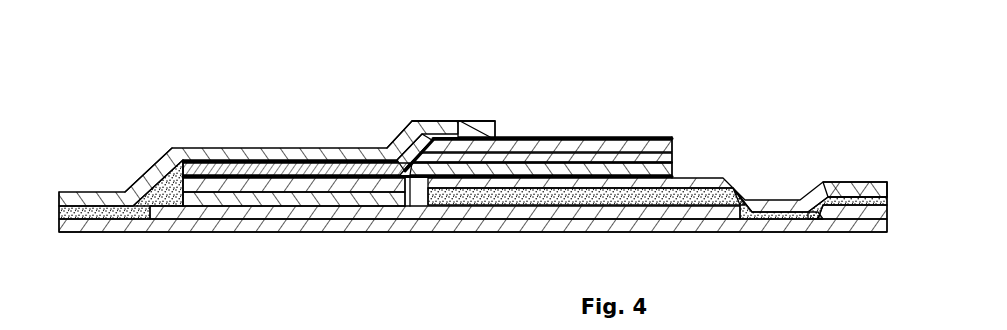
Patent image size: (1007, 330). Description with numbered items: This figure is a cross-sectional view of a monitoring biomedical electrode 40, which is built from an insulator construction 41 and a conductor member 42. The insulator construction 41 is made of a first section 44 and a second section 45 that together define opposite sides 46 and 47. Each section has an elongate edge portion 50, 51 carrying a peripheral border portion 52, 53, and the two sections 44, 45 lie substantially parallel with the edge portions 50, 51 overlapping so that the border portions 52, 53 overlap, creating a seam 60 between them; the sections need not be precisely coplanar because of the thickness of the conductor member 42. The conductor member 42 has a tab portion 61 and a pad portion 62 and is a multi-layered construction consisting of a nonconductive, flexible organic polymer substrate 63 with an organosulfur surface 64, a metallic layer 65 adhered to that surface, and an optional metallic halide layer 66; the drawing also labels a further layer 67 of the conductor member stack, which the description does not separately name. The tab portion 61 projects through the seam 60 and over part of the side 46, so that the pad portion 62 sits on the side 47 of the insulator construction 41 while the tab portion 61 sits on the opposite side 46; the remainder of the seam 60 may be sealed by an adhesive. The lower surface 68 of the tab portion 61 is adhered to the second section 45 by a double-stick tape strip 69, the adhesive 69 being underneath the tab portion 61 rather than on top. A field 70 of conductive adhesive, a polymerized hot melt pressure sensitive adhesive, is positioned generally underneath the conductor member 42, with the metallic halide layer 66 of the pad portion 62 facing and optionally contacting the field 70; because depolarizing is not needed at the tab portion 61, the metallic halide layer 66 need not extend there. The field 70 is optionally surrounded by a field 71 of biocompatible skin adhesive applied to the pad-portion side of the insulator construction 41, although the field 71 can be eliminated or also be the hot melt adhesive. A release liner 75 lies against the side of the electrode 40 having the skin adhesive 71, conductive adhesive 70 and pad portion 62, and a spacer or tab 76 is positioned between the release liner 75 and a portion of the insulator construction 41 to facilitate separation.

The electrode 40 is at (708, 101).
The insulator construction 41 is at (139, 154).
The conductor member 42 is at (684, 143).
The first section 44 is at (377, 148).
The second section 45 is at (700, 178).
The side 46 is at (312, 152).
The side 47 is at (349, 151).
The elongate edge portion 50 is at (497, 135).
The elongate edge portion 51 is at (425, 178).
The border portion 52 is at (477, 137).
The border portion 53 is at (524, 165).
The seam 60 is at (460, 121).
The tab portion 61 is at (592, 130).
The pad portion 62 is at (196, 148).
The nonconductive, flexible organic polymer substrate 63 is at (230, 160).
The organosulfur surface 64 is at (279, 168).
The metallic layer 65 is at (222, 185).
The metallic halide layer 66 is at (296, 198).
The upper layer of stack 67 is at (622, 140).
The lower surface 68 is at (645, 183).
The double-stick tape strip 69 is at (455, 215).
The field of conductive adhesive 70 is at (372, 212).
The field of biocompatible skin adhesive 71 is at (157, 205).
The release liner 75 is at (830, 226).
The spacer 76 is at (873, 222).